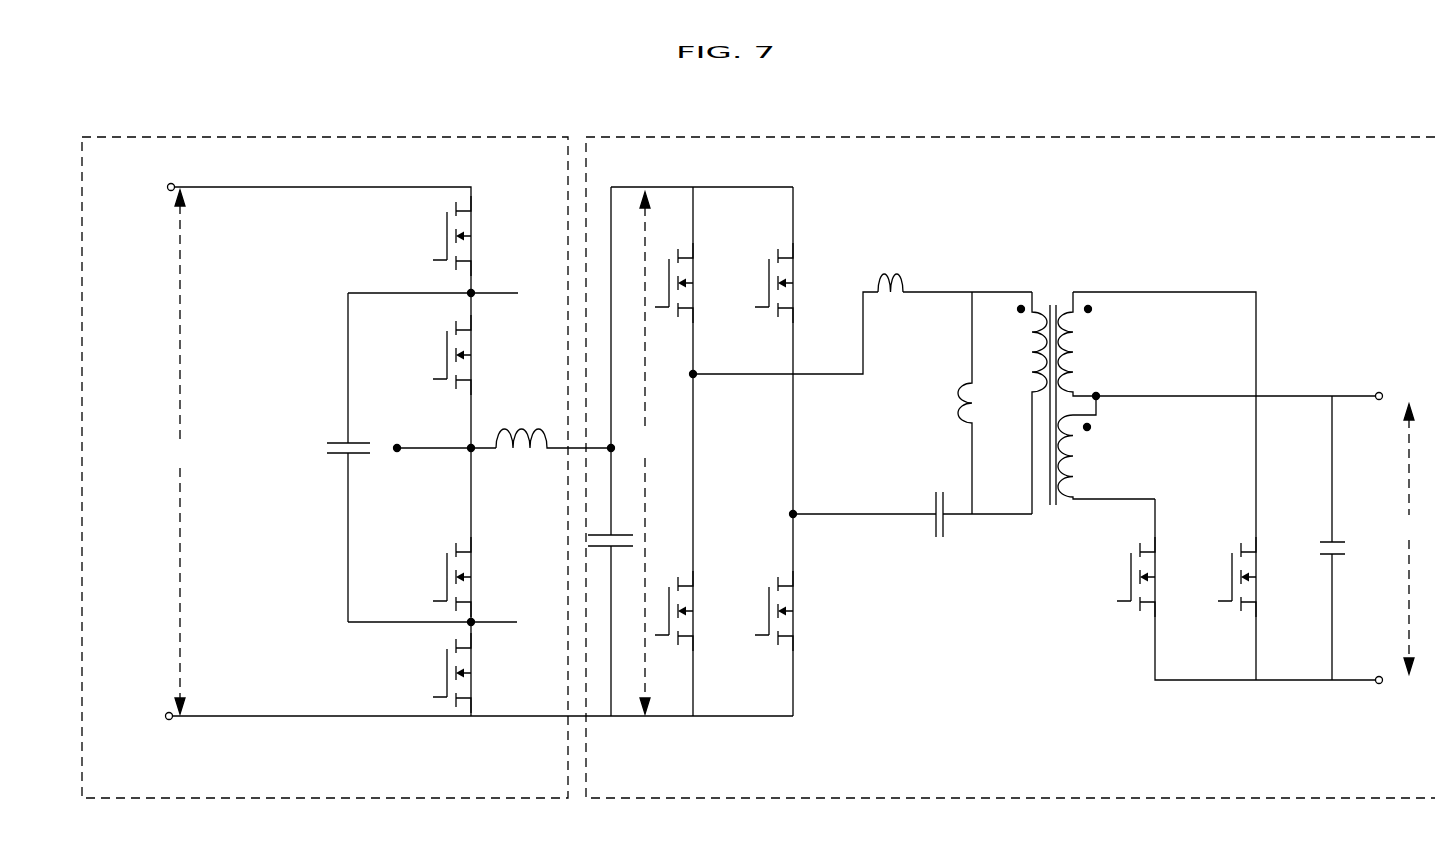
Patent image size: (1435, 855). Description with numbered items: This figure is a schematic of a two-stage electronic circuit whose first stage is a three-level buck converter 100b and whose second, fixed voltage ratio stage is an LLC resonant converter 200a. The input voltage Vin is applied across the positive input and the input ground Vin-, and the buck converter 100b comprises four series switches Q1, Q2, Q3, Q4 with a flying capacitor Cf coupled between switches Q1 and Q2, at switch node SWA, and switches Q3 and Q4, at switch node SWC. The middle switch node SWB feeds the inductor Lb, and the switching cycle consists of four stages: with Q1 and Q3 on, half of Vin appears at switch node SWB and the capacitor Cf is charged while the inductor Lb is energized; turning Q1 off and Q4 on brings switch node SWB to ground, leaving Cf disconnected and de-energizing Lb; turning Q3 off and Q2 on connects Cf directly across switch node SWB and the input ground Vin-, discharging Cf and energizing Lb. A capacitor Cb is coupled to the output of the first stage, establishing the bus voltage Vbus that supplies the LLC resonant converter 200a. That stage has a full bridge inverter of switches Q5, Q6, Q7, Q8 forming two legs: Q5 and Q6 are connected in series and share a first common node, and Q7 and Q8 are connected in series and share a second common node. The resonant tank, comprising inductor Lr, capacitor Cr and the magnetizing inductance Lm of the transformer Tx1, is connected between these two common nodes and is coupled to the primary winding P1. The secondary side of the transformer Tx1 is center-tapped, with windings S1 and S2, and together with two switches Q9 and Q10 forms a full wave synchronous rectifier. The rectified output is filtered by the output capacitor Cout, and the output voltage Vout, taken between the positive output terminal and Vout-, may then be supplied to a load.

The three-level buck converter 100b is at (346, 787).
The LLC resonant converter second stage 200a is at (1042, 787).
The switch Q1 is at (466, 236).
The switch Q2 is at (466, 355).
The switch Q3 is at (466, 577).
The switch Q4 is at (466, 673).
The switch Q5 is at (688, 283).
The switch Q6 is at (688, 611).
The switch Q7 is at (788, 283).
The switch Q8 is at (789, 611).
The switch Q9 is at (1152, 577).
The switch Q10 is at (1257, 577).
The flying capacitor Cf is at (323, 457).
The inductor Lb is at (553, 423).
The capacitor Cb is at (614, 525).
The inductor Lr is at (890, 269).
The magnetizing inductance Lm is at (949, 403).
The capacitor Cr is at (945, 531).
The transformer Tx1 is at (1080, 389).
The primary winding P1 is at (1026, 403).
The secondary winding S1 is at (1080, 344).
The secondary winding S2 is at (1106, 447).
The output capacitor Cout is at (1355, 538).
The switch node SWA is at (453, 305).
The switch node SWB is at (444, 465).
The switch node SWC is at (451, 634).
The bus voltage Vbus is at (637, 453).
The input voltage Vin is at (184, 452).
The input ground Vin- is at (146, 703).
The output voltage Vout is at (1404, 539).
The negative output terminal Vout- is at (1403, 682).